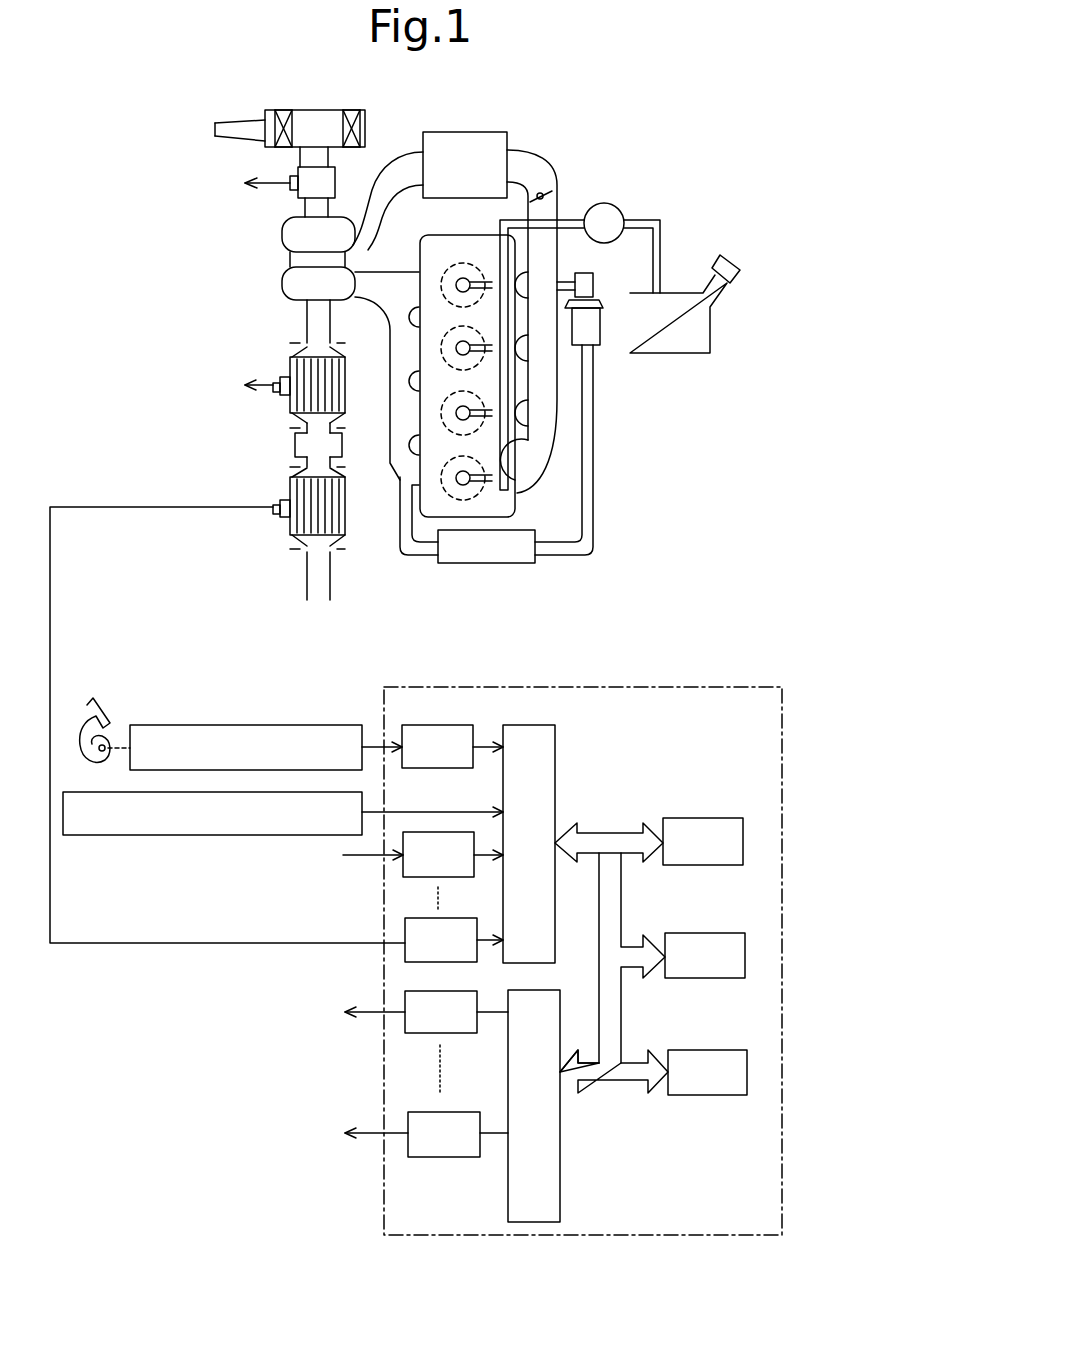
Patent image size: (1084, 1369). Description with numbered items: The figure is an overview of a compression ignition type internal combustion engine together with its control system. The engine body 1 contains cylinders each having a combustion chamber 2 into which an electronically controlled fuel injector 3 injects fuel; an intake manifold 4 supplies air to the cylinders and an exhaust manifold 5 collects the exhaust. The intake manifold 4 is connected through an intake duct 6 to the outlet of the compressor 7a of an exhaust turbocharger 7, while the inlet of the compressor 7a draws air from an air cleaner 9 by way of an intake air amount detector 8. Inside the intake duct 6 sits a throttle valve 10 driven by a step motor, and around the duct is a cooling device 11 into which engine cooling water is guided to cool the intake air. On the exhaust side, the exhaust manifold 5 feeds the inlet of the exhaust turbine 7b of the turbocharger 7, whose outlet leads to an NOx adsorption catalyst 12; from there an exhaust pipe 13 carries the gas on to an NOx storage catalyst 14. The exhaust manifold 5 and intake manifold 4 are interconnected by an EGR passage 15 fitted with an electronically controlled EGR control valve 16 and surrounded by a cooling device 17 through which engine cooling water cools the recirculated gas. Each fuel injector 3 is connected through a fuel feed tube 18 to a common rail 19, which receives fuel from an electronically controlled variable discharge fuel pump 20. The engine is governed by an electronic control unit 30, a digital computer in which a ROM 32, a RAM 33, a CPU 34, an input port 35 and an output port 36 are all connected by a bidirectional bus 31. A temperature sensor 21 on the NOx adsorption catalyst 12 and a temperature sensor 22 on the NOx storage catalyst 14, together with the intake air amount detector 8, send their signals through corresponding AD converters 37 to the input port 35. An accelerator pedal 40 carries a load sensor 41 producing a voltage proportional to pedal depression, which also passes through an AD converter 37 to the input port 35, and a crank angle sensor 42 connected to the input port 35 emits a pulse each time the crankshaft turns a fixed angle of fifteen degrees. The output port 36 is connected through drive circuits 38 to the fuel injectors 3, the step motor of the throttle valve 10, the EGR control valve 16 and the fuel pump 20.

The engine body 1 is at (530, 519).
The combustion chamber 2 is at (452, 462).
The fuel injector 3 is at (460, 280).
The intake manifold 4 is at (548, 460).
The exhaust manifold 5 is at (392, 464).
The intake duct 6 is at (545, 160).
The exhaust turbocharger 7 is at (269, 257).
The compressor 7a is at (288, 235).
The exhaust turbine 7b is at (288, 292).
The intake air amount detector 8 is at (333, 181).
The air cleaner 9 is at (365, 122).
The throttle valve 10 is at (552, 191).
The cooling device 11 is at (468, 132).
The NOx adsorption catalyst 12 is at (295, 370).
The exhaust pipe 13 is at (312, 443).
The NOx storage catalyst 14 is at (298, 520).
The EGR passage 15 is at (594, 422).
The EGR control valve 16 is at (590, 283).
The cooling device 17 is at (490, 563).
The fuel feed tube 18 is at (500, 270).
The common rail 19 is at (503, 383).
The fuel pump 20 is at (618, 208).
The temperature sensor 21 is at (273, 390).
The temperature sensor 22 is at (273, 503).
The electronic control unit 30 is at (792, 708).
The bidirectional bus 31 is at (608, 834).
The read only memory (ROM) 32 is at (695, 818).
The random access memory (RAM) 33 is at (695, 933).
The microprocessor (CPU) 34 is at (697, 1050).
The input port 35 is at (530, 725).
The output port 36 is at (560, 1133).
The AD converter 37 is at (435, 725).
The drive circuit 38 is at (408, 1125).
The accelerator pedal 40 is at (97, 700).
The load sensor 41 is at (320, 725).
The crank angle sensor 42 is at (235, 835).